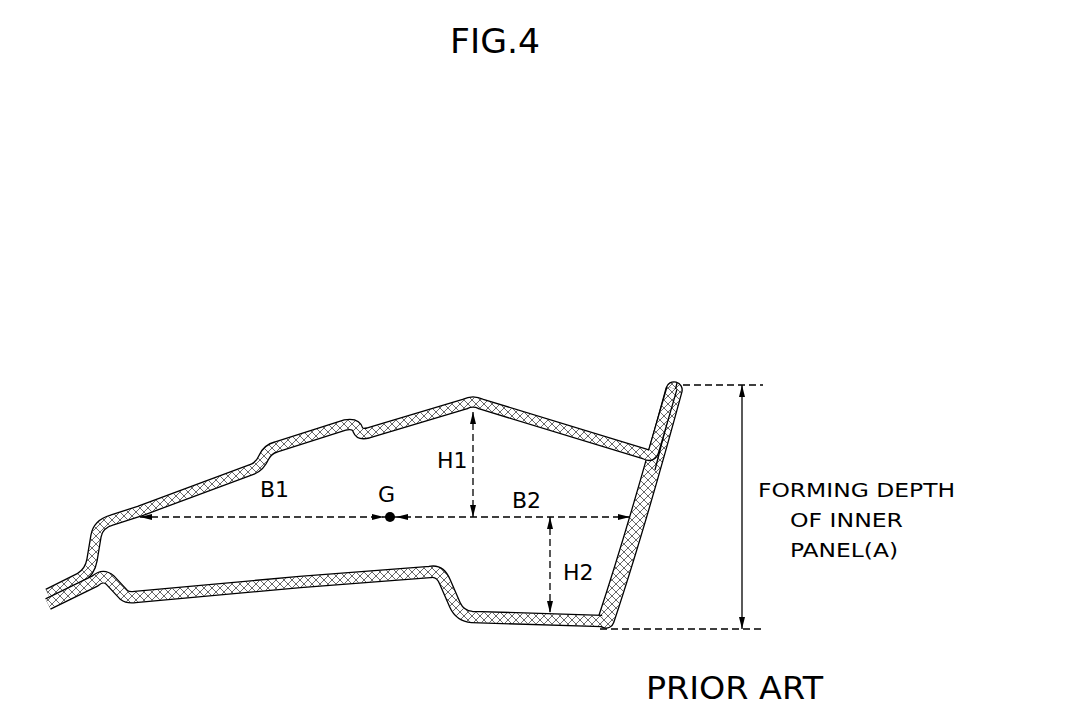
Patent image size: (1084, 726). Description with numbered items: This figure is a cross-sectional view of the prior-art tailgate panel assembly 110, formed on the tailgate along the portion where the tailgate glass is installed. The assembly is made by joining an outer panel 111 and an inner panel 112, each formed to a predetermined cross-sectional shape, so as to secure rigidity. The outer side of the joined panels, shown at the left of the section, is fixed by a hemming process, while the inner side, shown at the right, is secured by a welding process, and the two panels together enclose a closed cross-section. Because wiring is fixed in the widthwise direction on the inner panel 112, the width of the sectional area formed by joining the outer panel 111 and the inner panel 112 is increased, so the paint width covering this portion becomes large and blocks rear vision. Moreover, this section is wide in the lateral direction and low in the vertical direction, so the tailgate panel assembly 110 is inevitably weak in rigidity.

The tailgate panel assembly 110 is at (662, 343).
The outer panel 111 is at (565, 428).
The inner panel 112 is at (343, 582).